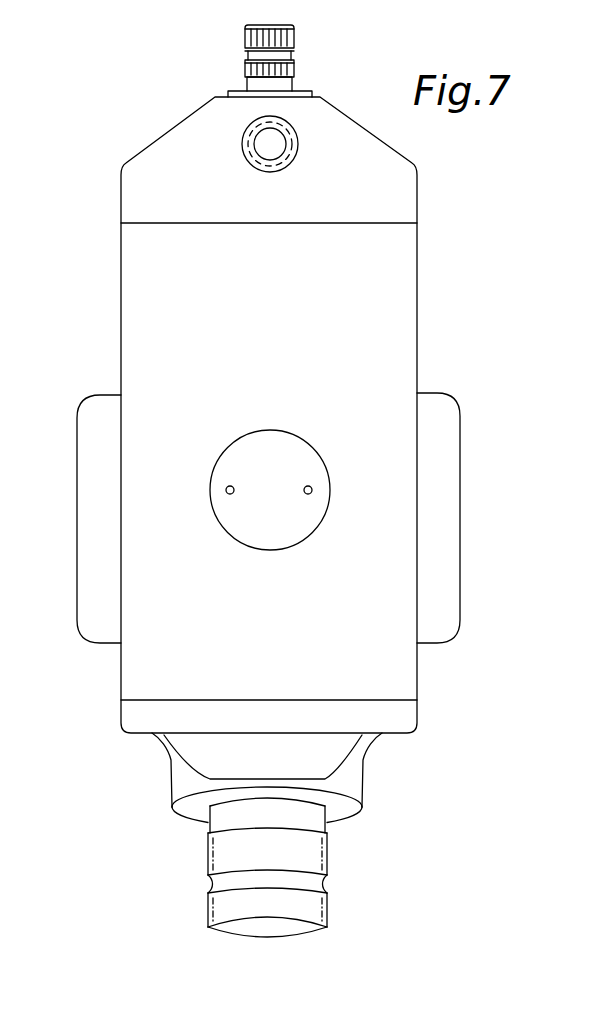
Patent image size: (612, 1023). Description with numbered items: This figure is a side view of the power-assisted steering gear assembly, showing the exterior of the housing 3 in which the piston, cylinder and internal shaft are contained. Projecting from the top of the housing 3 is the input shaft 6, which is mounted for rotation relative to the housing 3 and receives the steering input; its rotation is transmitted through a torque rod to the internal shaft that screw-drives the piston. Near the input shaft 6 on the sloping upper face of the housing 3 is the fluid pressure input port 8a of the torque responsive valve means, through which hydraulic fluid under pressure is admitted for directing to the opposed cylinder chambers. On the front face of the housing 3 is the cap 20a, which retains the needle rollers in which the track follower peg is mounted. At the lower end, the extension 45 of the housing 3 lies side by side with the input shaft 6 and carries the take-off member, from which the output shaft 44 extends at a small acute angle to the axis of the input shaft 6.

The housing 3 is at (386, 161).
The input shaft 6 is at (246, 68).
The fluid pressure input port 8a is at (277, 140).
The cap 20a is at (340, 408).
The output shaft 44 is at (316, 859).
The extension of the housing 45 is at (88, 469).